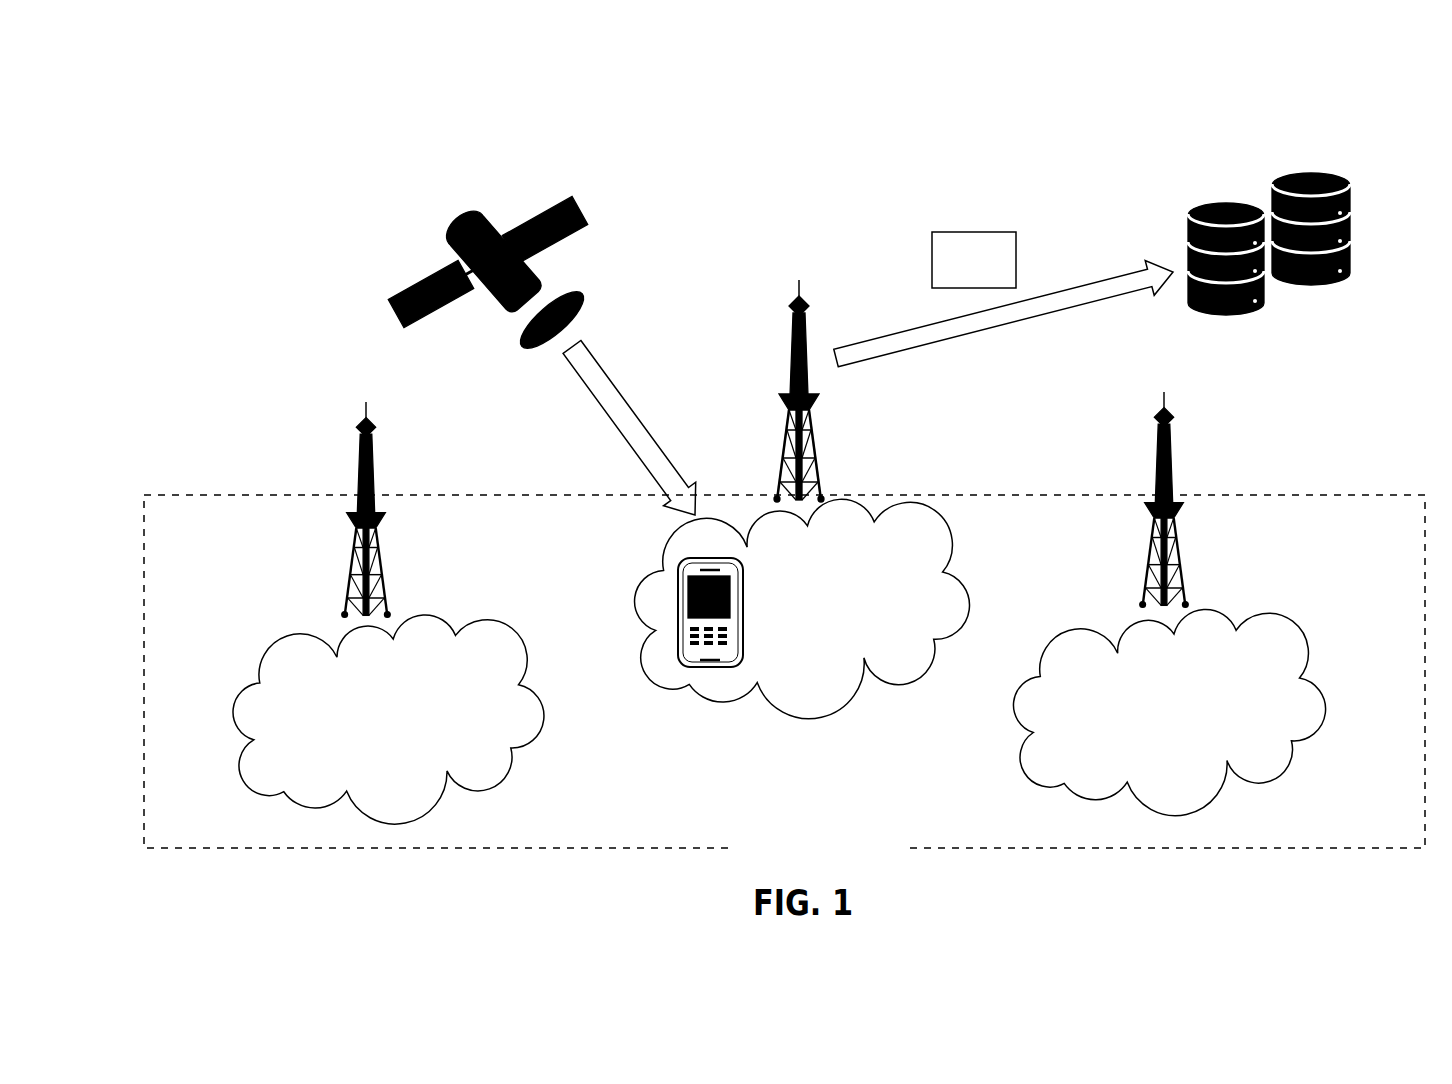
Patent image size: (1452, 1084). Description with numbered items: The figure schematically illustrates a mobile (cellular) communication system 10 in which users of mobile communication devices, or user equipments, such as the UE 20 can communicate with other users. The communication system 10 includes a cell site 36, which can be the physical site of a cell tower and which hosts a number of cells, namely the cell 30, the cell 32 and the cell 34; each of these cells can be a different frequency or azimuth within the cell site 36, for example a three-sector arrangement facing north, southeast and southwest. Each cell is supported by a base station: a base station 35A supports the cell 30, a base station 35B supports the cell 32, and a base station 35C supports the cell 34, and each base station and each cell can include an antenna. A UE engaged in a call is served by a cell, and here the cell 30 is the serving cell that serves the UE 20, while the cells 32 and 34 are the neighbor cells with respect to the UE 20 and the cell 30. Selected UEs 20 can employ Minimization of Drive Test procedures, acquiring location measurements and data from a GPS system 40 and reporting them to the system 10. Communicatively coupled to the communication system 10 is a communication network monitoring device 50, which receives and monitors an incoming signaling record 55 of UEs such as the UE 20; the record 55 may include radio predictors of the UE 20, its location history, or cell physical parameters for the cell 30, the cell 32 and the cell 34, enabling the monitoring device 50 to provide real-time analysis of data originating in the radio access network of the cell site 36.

The mobile communication system 10 is at (777, 178).
The user equipment 20 is at (668, 553).
The serving cell 30 is at (813, 718).
The neighbor cell 32 is at (497, 782).
The neighbor cell 34 is at (1082, 808).
The base station 35A is at (823, 470).
The base station 35B is at (390, 555).
The base station 35C is at (1187, 553).
The cell site 36 is at (784, 673).
The GPS system 40 is at (488, 195).
The communication network monitoring device 50 is at (1249, 178).
The incoming signaling record 55 is at (993, 232).